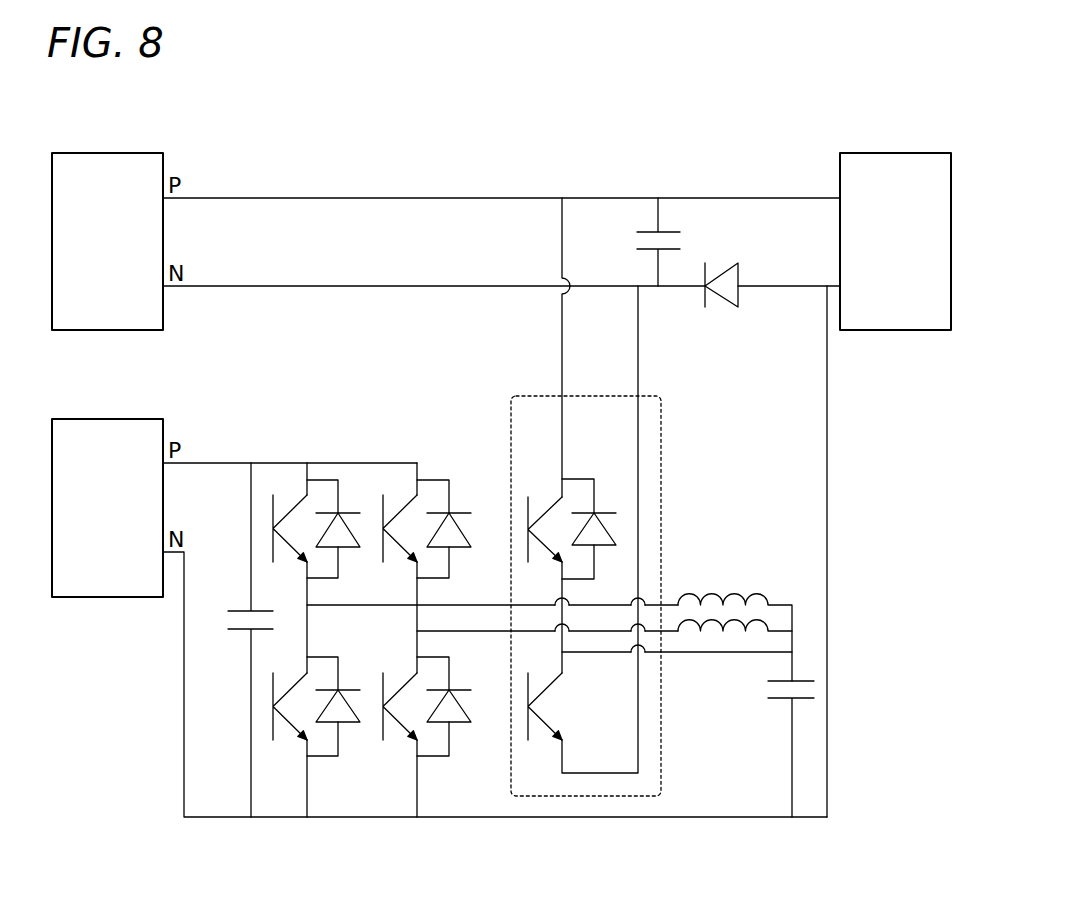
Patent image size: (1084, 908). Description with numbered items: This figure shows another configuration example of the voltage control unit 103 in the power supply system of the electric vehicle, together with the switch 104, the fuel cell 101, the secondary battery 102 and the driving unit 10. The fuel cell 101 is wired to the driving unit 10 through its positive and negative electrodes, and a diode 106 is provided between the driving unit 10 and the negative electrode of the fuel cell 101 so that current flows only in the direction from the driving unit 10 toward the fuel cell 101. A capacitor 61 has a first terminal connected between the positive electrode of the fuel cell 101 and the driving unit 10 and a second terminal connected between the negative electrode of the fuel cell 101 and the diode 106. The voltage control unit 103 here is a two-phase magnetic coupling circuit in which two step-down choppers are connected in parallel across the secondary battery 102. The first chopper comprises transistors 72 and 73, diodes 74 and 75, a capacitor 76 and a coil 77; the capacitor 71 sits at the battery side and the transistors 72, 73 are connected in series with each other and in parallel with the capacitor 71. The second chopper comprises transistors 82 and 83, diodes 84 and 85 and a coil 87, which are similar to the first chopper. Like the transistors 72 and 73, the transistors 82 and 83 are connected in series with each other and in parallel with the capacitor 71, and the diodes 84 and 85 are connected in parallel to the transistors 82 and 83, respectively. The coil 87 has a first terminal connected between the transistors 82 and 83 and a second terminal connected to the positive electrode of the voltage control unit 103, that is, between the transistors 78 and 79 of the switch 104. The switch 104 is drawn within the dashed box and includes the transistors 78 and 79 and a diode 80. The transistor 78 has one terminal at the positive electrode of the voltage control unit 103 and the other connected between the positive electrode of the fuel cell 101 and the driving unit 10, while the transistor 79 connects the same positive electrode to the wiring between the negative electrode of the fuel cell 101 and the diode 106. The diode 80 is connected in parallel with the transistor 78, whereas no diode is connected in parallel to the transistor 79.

The driving unit 10 is at (893, 153).
The fuel cell 101 is at (105, 153).
The secondary battery 102 is at (104, 419).
The voltage control unit 103 is at (352, 409).
The switch 104 is at (527, 396).
The capacitor 61 is at (676, 232).
The diode 106 is at (724, 307).
The capacitor 71 is at (228, 611).
The transistor 72 is at (273, 495).
The transistor 73 is at (273, 740).
The diode 74 is at (348, 513).
The diode 75 is at (341, 690).
The capacitor 76 is at (771, 700).
The coil 77 is at (752, 585).
The transistor 78 is at (527, 497).
The transistor 79 is at (528, 674).
The diode 80 is at (606, 513).
The transistor 82 is at (383, 495).
The transistor 83 is at (383, 740).
The diode 84 is at (462, 513).
The diode 85 is at (451, 690).
The coil 87 is at (689, 605).